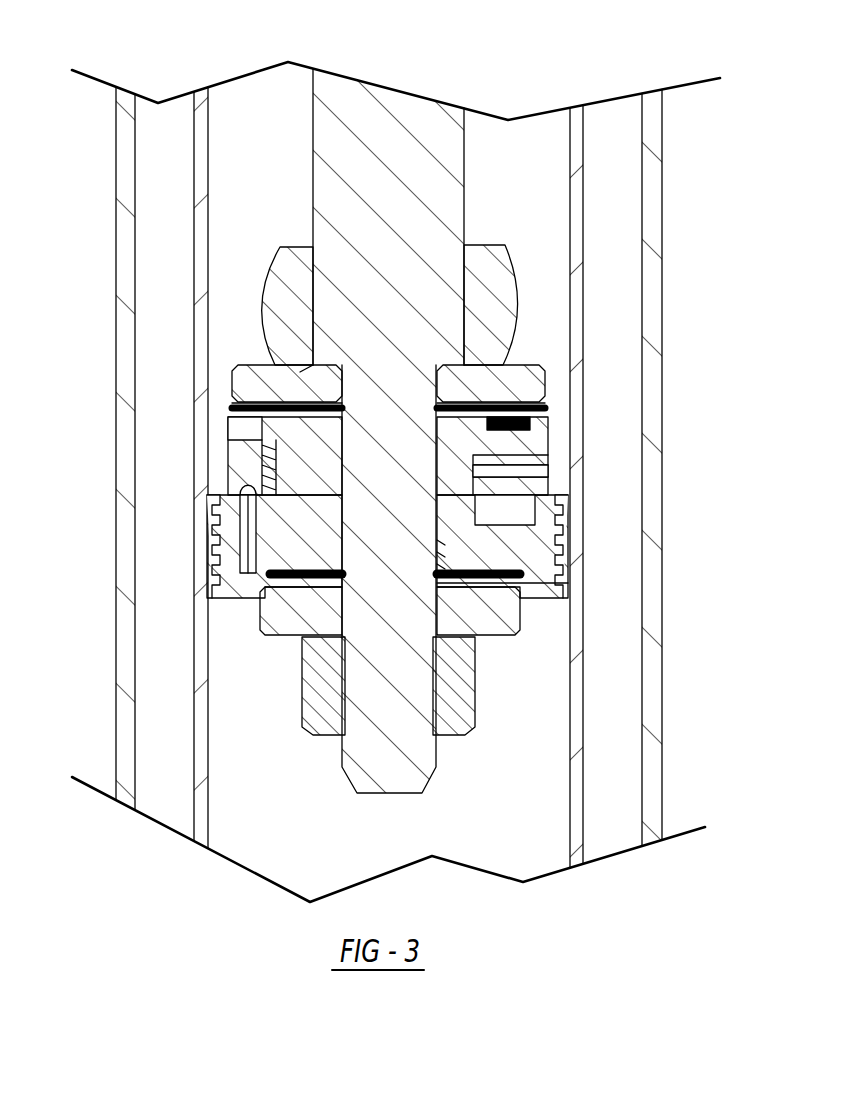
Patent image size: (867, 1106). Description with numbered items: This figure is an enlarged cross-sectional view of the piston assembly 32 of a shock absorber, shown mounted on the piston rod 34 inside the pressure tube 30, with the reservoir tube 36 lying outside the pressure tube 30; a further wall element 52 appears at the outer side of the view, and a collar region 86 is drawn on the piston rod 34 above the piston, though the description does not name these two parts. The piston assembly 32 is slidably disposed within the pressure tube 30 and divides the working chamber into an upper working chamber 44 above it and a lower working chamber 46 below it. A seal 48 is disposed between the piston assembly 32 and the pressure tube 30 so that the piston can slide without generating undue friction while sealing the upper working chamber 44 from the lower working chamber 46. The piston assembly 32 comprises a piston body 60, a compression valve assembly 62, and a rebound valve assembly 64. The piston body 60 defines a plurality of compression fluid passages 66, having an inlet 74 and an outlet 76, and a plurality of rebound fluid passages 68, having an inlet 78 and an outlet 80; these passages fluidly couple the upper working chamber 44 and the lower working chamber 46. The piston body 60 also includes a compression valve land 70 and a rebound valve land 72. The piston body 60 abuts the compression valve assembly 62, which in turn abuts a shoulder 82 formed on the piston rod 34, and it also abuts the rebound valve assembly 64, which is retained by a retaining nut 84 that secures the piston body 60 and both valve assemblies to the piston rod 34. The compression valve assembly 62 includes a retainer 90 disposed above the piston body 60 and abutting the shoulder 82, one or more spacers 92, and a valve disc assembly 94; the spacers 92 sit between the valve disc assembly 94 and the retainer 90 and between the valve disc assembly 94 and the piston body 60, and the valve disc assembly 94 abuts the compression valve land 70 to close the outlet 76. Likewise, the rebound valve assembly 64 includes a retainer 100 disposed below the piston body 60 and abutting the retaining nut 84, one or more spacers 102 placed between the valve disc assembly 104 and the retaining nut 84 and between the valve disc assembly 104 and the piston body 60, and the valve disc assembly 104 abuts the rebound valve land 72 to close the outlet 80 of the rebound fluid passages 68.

The pressure tube 30 is at (582, 191).
The piston assembly 32 is at (238, 246).
The piston rod 34 is at (372, 207).
The reservoir tube 36 is at (665, 217).
The upper working chamber 44 is at (232, 155).
The lower working chamber 46 is at (267, 825).
The seal 48 is at (216, 497).
The side panel 52 is at (162, 213).
The piston body 60 is at (555, 432).
The compression valve assembly 62 is at (526, 328).
The rebound valve assembly 64 is at (274, 683).
The compression fluid passages 66 is at (272, 448).
The rebound fluid passages 68 is at (500, 485).
The compression valve land 70 is at (268, 427).
The rebound valve land 72 is at (555, 565).
The inlet 74 is at (250, 600).
The outlet 76 is at (300, 425).
The inlet 78 is at (537, 470).
The outlet 80 is at (470, 560).
The shoulder 82 is at (305, 372).
The retaining nut 84 is at (465, 688).
The collar 86 is at (485, 258).
The retainer 90 is at (265, 377).
The spacers 92 is at (345, 400).
The valve disc assembly 94 is at (272, 405).
The retainer 100 is at (495, 620).
The spacers 102 is at (322, 570).
The valve disc assembly 104 is at (540, 575).